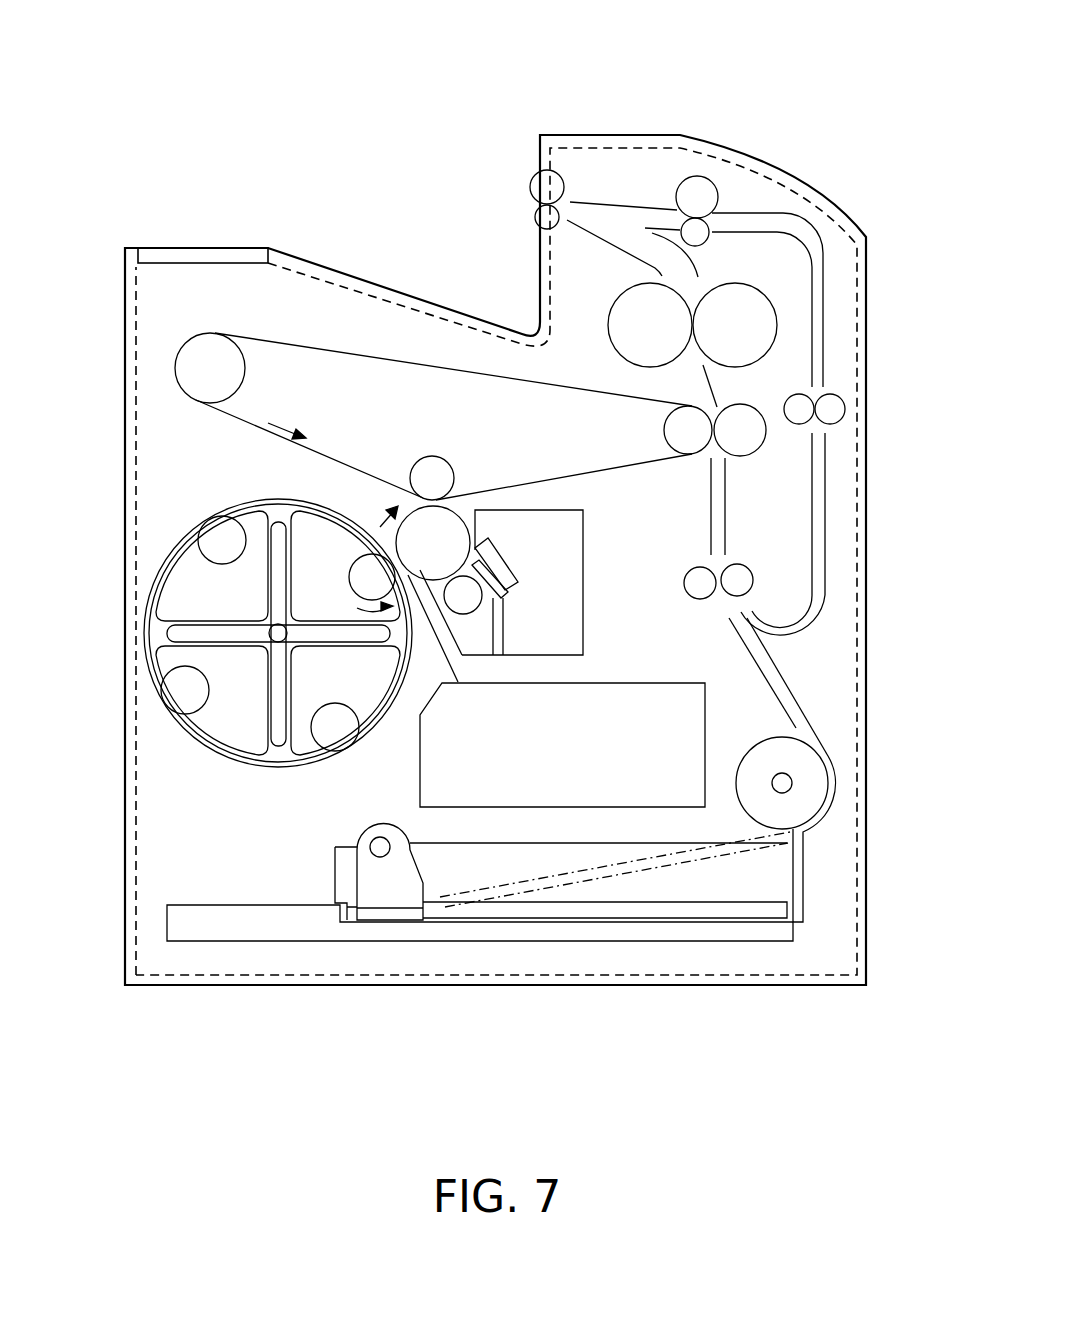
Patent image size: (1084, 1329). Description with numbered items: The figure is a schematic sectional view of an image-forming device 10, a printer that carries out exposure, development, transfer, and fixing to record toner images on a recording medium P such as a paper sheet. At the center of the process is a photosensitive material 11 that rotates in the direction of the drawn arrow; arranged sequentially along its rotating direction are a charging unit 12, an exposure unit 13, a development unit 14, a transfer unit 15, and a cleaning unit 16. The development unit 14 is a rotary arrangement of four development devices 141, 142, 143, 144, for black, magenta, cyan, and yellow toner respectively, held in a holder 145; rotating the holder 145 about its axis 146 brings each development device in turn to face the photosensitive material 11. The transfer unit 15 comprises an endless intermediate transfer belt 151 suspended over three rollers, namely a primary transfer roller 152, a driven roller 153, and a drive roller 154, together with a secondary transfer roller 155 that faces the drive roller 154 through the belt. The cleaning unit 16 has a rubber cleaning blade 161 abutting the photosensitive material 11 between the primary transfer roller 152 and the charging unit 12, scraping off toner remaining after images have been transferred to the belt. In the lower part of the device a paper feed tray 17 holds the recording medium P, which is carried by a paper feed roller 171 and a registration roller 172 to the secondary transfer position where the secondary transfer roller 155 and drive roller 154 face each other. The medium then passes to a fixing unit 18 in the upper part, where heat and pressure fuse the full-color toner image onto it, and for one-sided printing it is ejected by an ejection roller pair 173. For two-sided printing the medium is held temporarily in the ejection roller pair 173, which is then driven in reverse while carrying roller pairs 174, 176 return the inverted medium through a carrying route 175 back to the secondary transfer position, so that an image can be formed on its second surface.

The image-forming device 10 is at (635, 113).
The photosensitive material 11 is at (404, 500).
The charging unit 12 is at (470, 597).
The exposure unit 13 is at (667, 680).
The development unit 14 is at (233, 651).
The development device 141 is at (378, 702).
The development device 142 is at (210, 725).
The development device 143 is at (188, 568).
The development device 144 is at (335, 525).
The holder 145 is at (281, 768).
The rotation shaft 146 is at (268, 640).
The transfer unit 15 is at (479, 375).
The intermediate transfer belt 151 is at (302, 348).
The primary transfer roller 152 is at (432, 472).
The driven roller 153 is at (207, 350).
The drive roller 154 is at (668, 432).
The secondary transfer roller 155 is at (748, 440).
The cleaning unit 16 is at (526, 595).
The cleaning blade 161 is at (505, 562).
The paper feed tray 17 is at (335, 873).
The paper feed roller 171 is at (805, 784).
The registration roller 172 is at (740, 578).
The ejection roller pair 173 is at (545, 185).
The carrying roller pair 174 is at (699, 192).
The carrying route 175 is at (757, 215).
The carrying roller pair 176 is at (833, 406).
The fixing unit 18 is at (620, 300).
The recording medium P is at (580, 895).